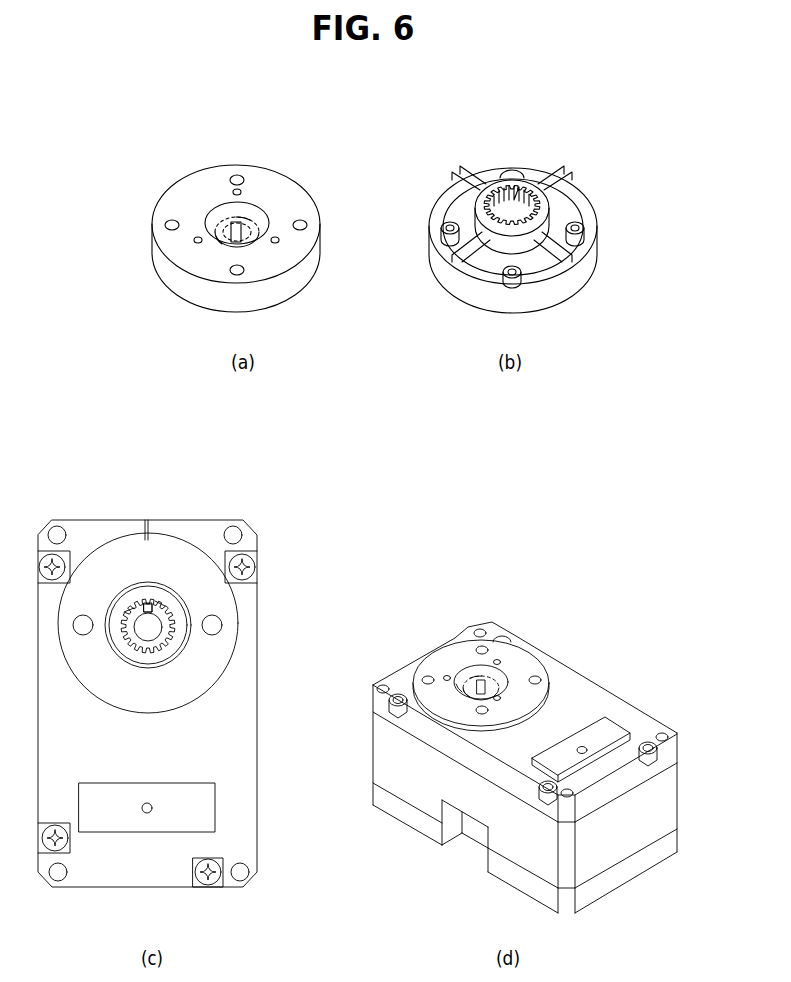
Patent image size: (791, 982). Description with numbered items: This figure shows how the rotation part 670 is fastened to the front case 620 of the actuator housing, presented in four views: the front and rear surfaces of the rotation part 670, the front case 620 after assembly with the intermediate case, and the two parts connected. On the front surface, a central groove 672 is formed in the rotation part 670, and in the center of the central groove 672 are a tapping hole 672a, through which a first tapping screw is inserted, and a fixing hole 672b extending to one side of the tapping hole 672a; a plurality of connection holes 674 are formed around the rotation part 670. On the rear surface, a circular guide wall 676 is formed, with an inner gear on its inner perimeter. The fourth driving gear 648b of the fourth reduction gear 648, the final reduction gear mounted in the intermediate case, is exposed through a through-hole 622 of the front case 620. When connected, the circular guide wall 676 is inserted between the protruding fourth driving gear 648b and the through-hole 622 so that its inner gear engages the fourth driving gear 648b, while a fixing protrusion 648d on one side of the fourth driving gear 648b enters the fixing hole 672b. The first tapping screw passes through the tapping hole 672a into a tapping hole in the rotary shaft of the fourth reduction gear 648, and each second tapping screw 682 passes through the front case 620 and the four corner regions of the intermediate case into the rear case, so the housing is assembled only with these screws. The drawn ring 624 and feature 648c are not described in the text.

The front case 620 is at (257, 757).
The through-hole 622 is at (177, 622).
The bearing ring 624 is at (188, 594).
The fourth reduction gear 648 is at (210, 455).
The fourth driving gear 648b is at (148, 603).
The key groove 648c is at (160, 602).
The fixing protrusion 648d is at (133, 608).
The rotation part 670 is at (180, 283).
The central groove 672 is at (262, 236).
The tapping hole 672a is at (222, 242).
The fixing hole 672b is at (243, 220).
The connection holes 674 is at (306, 222).
The circular guide wall 676 is at (515, 243).
The second tapping screw 682 is at (209, 886).